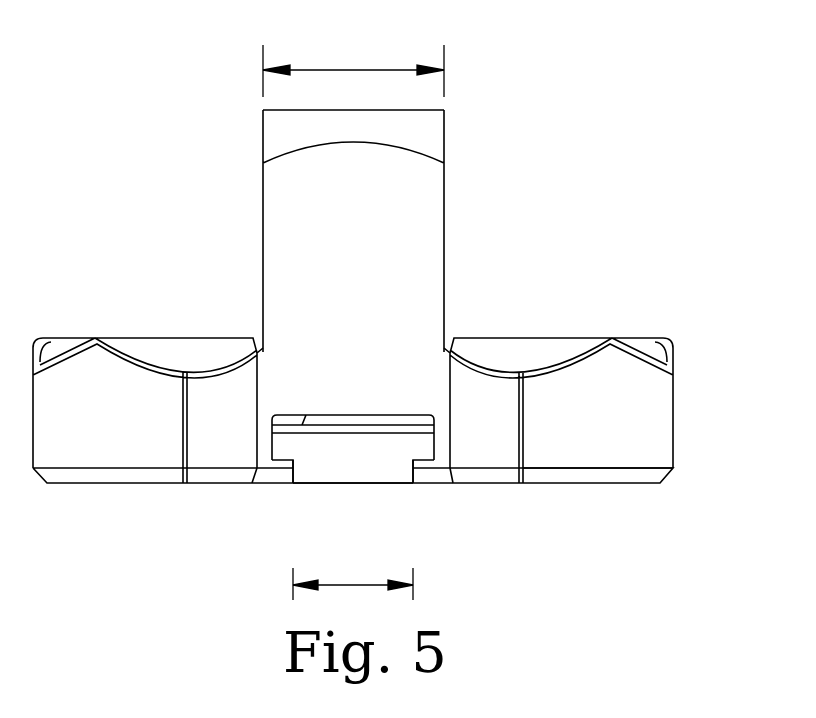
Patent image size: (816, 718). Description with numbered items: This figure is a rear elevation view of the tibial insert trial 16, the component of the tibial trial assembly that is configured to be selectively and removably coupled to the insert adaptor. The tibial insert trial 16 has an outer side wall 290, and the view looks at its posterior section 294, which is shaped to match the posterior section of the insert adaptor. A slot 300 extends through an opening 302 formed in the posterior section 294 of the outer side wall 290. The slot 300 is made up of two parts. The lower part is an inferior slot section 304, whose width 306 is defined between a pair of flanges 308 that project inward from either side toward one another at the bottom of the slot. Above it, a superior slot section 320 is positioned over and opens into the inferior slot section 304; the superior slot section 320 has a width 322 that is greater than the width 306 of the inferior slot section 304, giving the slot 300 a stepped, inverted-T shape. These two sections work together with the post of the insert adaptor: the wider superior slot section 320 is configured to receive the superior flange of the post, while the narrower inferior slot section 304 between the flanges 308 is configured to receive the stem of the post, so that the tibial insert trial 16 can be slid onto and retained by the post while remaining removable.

The tibial insert trial 16 is at (552, 212).
The outer side wall 290 is at (658, 407).
The posterior section 294 is at (582, 457).
The slot 300 is at (354, 476).
The opening 302 is at (390, 480).
The inferior slot section 304 is at (318, 482).
The width 306 is at (348, 585).
The flanges 308 is at (287, 461).
The superior slot section 320 is at (356, 418).
The width 322 is at (348, 70).